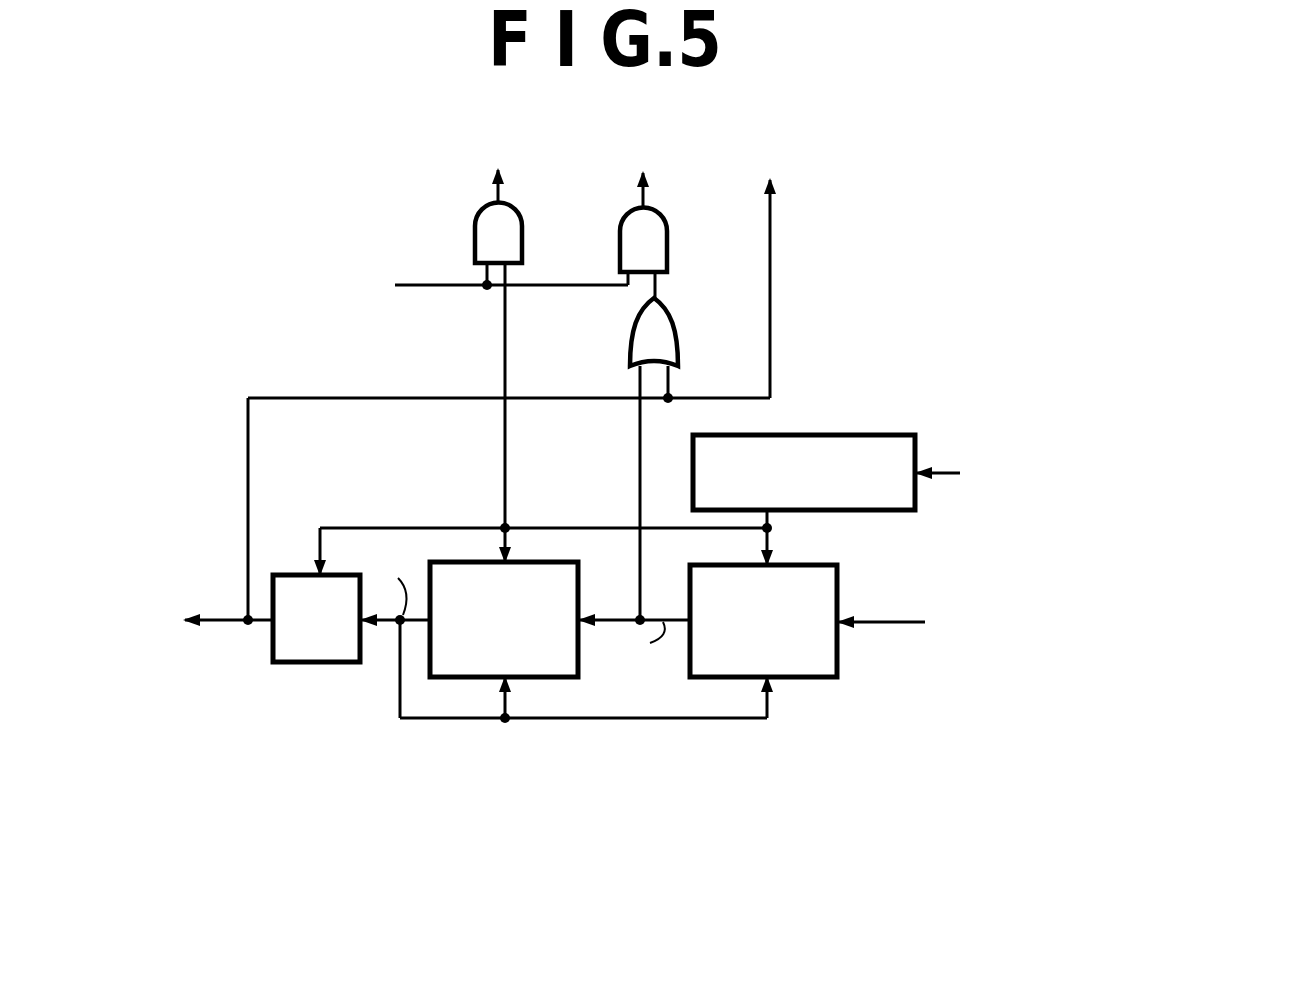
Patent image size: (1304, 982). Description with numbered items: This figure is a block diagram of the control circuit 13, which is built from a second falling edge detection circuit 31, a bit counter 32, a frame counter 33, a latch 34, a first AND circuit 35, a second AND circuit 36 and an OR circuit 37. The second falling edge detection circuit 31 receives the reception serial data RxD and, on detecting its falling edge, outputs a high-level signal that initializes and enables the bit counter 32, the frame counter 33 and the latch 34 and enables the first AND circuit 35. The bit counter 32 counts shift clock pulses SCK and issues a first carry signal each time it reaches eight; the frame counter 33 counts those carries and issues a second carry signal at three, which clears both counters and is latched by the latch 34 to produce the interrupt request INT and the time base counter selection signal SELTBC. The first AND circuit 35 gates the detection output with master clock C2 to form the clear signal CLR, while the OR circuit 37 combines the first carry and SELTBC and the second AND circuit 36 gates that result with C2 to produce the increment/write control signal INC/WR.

The control circuit 13 is at (786, 741).
The second falling edge detection circuit 31 is at (818, 440).
The bit counter 32 is at (817, 587).
The frame counter 33 is at (545, 662).
The latch 34 is at (295, 653).
The first AND circuit 35 is at (478, 240).
The second AND circuit 36 is at (658, 232).
The OR circuit 37 is at (663, 330).